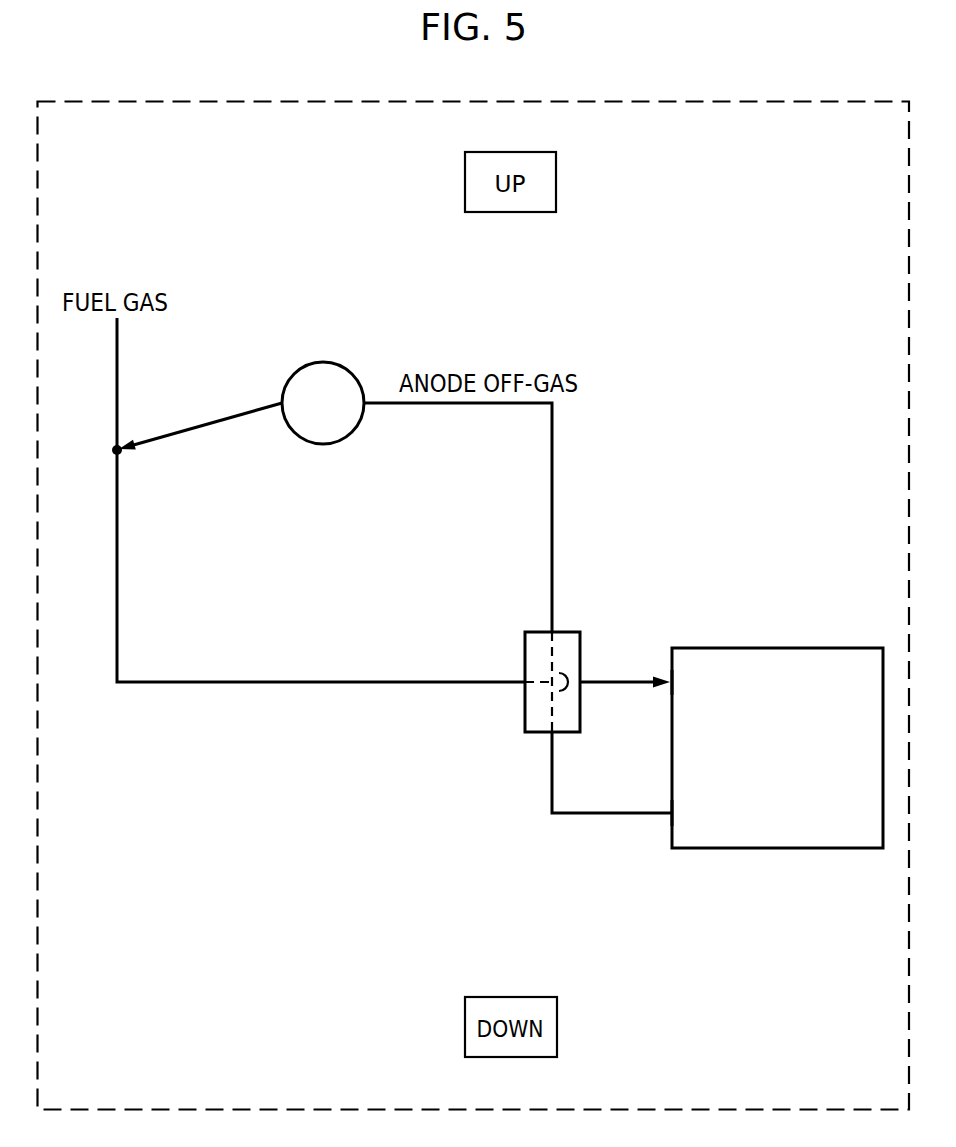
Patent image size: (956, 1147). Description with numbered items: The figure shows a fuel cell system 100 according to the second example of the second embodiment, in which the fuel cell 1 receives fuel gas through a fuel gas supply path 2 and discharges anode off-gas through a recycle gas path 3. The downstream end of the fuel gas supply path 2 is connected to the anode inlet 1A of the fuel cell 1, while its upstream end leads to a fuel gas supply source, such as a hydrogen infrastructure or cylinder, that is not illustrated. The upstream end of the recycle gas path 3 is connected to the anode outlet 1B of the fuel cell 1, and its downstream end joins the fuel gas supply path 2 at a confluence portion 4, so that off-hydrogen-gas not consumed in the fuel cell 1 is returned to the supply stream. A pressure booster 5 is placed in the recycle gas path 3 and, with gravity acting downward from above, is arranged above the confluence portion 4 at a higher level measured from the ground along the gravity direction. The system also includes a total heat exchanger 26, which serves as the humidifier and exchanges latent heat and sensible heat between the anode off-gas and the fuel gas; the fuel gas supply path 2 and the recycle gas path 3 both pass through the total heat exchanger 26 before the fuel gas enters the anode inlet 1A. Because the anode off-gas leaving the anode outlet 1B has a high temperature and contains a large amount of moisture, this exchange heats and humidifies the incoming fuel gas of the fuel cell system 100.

The fuel cell system 100 is at (664, 294).
The fuel cell 1 is at (785, 764).
The anode inlet 1A is at (673, 681).
The anode outlet 1B is at (673, 814).
The fuel gas supply path 2 is at (209, 683).
The recycle gas path 3 is at (383, 401).
The confluence portion 4 is at (113, 455).
The pressure booster 5 is at (314, 417).
The total heat exchanger 26 is at (562, 630).